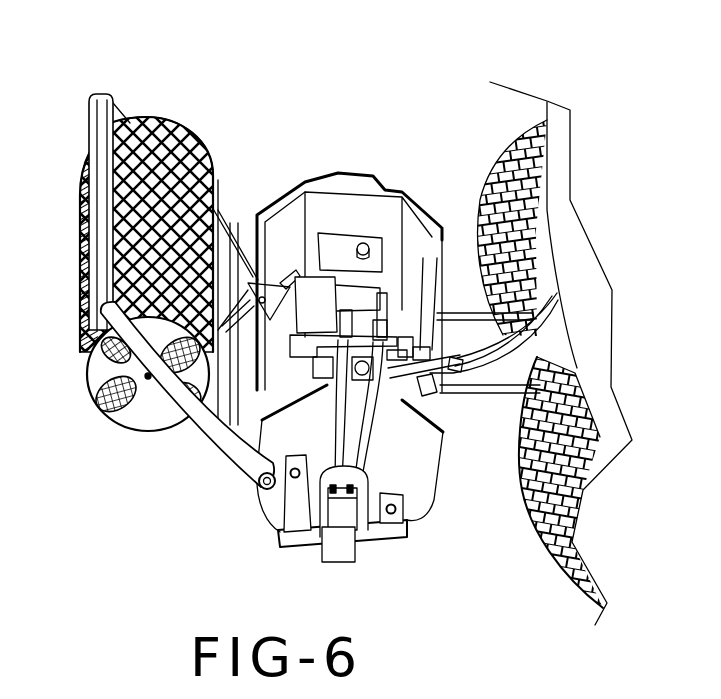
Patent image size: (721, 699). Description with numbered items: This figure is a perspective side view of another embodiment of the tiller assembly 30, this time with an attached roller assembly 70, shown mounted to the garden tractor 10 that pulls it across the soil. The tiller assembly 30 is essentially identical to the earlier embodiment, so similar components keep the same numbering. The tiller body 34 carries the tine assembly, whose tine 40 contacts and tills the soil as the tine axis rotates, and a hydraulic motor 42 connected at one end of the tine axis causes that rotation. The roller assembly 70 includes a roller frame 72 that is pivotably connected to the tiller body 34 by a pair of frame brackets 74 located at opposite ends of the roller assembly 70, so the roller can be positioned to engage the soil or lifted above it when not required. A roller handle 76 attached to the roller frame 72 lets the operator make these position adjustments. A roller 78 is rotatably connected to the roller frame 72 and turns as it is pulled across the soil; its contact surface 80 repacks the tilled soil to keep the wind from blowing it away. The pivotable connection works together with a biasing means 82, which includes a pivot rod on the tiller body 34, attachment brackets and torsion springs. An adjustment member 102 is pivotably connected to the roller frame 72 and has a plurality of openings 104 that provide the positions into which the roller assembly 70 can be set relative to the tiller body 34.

The garden tractor 10 is at (612, 387).
The tiller assembly 30 is at (430, 92).
The tiller body 34 is at (327, 205).
The tine 40 is at (292, 503).
The hydraulic motor 42 is at (345, 552).
The roller assembly 70 is at (263, 116).
The roller frame 72 is at (86, 302).
The frame bracket 74 is at (222, 217).
The roller handle 76 is at (82, 172).
The roller 78 is at (90, 380).
The contact surface 80 is at (184, 127).
The biasing means 82 is at (180, 94).
The adjustment member 102 is at (290, 278).
The openings 104 is at (282, 282).